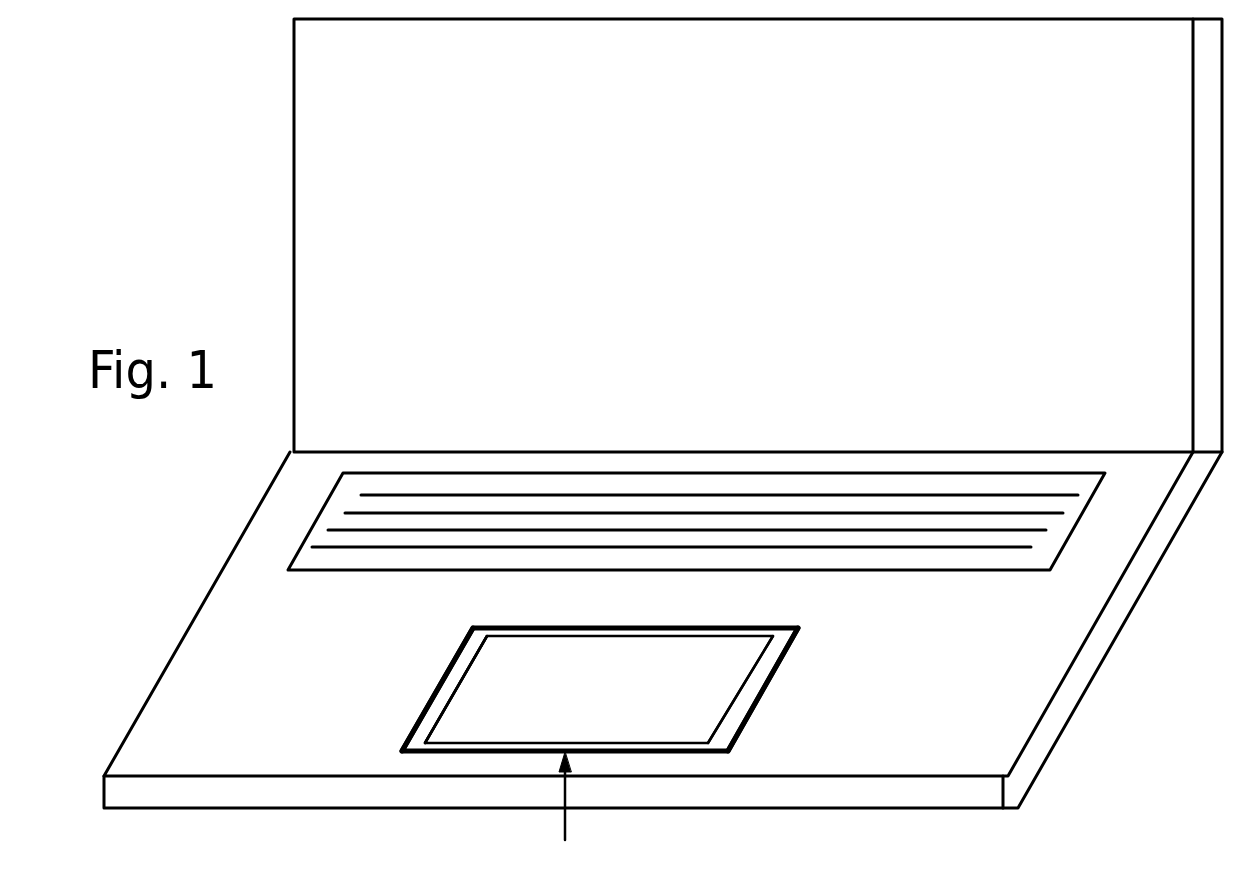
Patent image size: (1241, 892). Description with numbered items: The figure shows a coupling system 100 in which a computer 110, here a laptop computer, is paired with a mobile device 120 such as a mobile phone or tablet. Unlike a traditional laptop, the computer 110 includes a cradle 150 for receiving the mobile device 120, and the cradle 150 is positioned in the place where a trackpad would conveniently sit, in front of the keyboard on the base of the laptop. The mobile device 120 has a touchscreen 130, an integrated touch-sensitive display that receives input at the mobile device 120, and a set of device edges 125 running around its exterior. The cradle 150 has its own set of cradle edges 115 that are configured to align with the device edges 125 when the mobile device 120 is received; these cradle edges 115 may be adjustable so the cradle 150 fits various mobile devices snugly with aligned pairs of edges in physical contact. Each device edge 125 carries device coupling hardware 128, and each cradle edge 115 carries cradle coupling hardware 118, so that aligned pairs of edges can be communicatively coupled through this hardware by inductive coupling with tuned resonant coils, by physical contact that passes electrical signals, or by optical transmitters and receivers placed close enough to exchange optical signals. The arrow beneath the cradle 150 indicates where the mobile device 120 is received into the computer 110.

The coupling system 100 is at (190, 81).
The computer 110 is at (378, 89).
The cradle edges 115 is at (421, 712).
The cradle coupling hardware 118 is at (443, 677).
The mobile device 120 is at (618, 704).
The device edges 125 is at (471, 668).
The device coupling hardware 128 is at (453, 698).
The touchscreen 130 is at (707, 690).
The cradle 150 is at (566, 813).